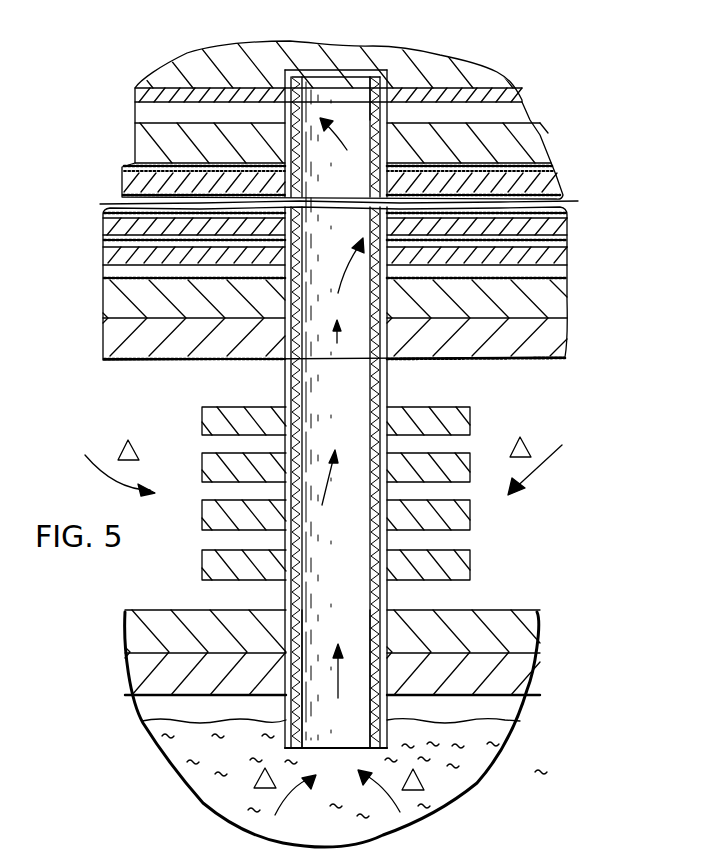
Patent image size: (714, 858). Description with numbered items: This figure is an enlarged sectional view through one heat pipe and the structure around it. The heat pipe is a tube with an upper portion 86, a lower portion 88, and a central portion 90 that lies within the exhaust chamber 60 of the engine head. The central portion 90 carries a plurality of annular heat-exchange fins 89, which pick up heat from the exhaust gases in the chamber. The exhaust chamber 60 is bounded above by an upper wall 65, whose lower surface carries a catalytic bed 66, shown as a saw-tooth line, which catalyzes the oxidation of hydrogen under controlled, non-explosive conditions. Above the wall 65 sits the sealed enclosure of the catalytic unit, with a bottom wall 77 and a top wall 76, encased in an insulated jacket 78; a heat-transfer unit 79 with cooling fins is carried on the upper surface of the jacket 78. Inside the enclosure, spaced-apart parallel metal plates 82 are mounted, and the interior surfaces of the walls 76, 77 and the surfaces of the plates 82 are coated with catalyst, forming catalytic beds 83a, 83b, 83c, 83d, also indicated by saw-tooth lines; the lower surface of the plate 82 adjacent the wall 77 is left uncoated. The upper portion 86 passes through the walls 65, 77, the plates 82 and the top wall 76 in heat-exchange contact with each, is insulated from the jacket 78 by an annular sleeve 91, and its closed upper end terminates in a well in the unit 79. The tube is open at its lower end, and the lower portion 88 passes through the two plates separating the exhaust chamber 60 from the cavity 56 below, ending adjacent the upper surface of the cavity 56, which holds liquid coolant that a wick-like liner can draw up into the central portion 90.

The cavity 56 is at (463, 757).
The exhaust chamber 60 is at (488, 580).
The upper wall of exhaust chamber 65 is at (562, 350).
The catalytic bed 66 is at (548, 361).
The top wall 76 is at (530, 138).
The bottom wall 77 is at (562, 300).
The insulated jacket 78 is at (520, 98).
The heat-transfer unit 79 is at (450, 62).
The metal plates 82 is at (566, 256).
The catalytic bed 83a is at (104, 276).
The catalytic bed 83b is at (104, 204).
The catalytic bed 83c is at (125, 185).
The catalytic bed 83d is at (128, 165).
The upper portion of tube 86 is at (284, 71).
The lower portion of tube 88 is at (390, 634).
The annular heat-exchange fins 89 is at (468, 571).
The central portion of tube 90 is at (390, 380).
The annular sleeve 91 is at (388, 82).